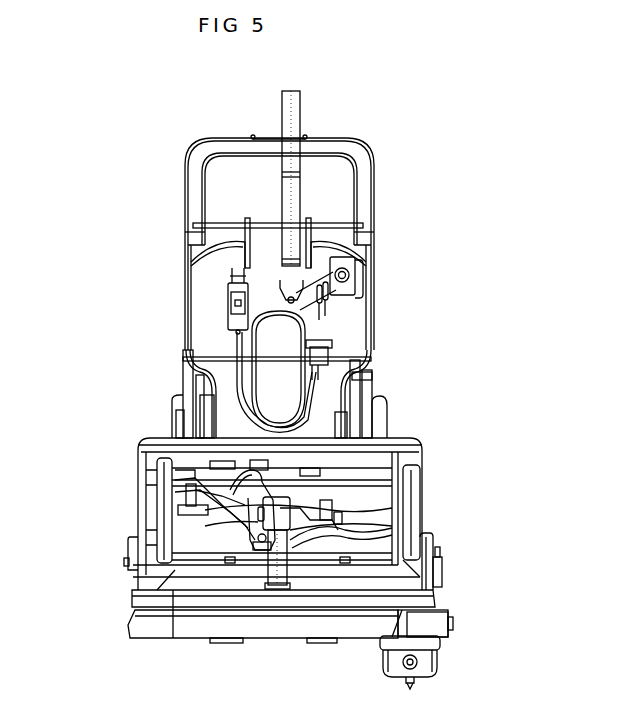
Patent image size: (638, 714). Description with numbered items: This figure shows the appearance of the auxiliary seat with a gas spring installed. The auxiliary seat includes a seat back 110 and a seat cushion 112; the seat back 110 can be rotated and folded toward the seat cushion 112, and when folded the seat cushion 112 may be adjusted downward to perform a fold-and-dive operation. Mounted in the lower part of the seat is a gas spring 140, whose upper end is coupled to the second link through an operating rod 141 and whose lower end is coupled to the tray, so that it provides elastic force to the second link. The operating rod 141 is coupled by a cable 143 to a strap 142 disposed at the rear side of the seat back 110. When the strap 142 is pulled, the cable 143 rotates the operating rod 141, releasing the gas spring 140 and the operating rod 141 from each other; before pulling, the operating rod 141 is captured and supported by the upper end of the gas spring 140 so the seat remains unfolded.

The seat back 110 is at (193, 203).
The seat cushion 112 is at (162, 438).
The gas spring 140 is at (280, 572).
The operating rod 141 is at (387, 538).
The strap 142 is at (292, 112).
The cable 143 is at (172, 508).